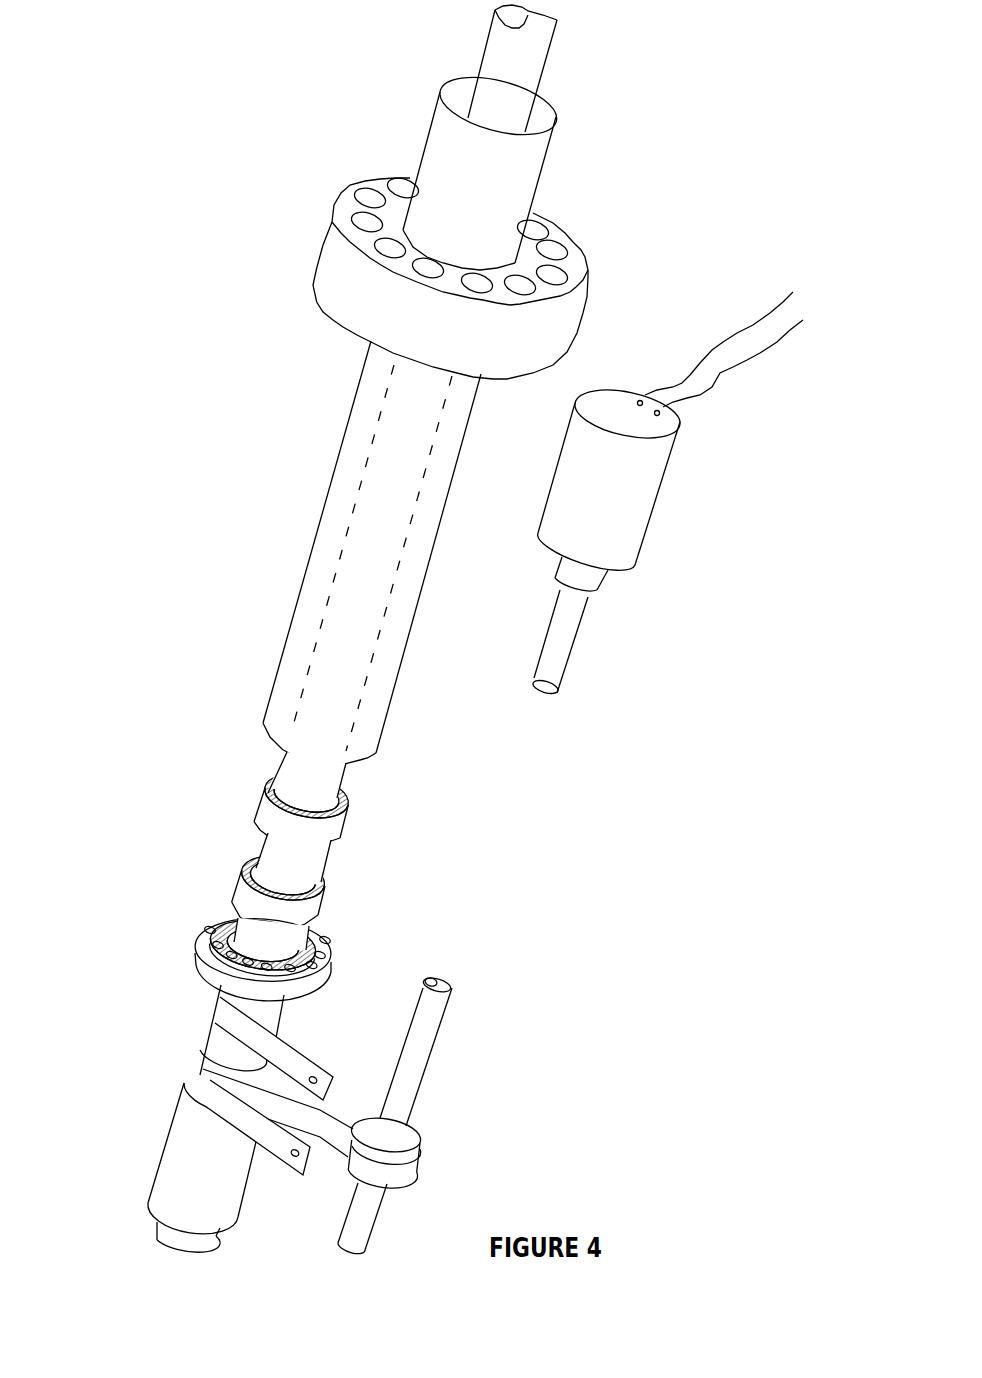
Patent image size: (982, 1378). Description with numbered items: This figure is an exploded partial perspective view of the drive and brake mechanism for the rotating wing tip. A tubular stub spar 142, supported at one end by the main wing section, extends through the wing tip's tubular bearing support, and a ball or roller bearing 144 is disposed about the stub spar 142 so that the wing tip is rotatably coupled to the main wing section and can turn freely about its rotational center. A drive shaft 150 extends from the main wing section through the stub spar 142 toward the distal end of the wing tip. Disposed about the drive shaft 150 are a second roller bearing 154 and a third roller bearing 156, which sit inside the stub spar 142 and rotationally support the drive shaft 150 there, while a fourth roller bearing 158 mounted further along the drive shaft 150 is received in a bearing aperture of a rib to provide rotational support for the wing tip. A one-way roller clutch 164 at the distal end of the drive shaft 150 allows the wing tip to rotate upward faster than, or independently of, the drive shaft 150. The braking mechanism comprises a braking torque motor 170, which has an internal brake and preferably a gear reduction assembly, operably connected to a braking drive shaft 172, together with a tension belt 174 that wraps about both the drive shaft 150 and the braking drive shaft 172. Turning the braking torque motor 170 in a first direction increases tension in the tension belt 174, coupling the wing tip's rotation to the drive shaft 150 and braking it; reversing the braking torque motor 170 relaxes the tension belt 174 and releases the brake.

The tubular stub spar 142 is at (320, 552).
The roller bearing 144 is at (409, 277).
The drive shaft 150 is at (548, 137).
The second roller bearing 154 is at (369, 799).
The third roller bearing 156 is at (371, 882).
The fourth roller bearing 158 is at (210, 920).
The one-way roller clutch 164 is at (152, 1167).
The braking torque motor 170 is at (683, 441).
The braking drive shaft 172 is at (664, 643).
The tension belt 174 is at (447, 1115).